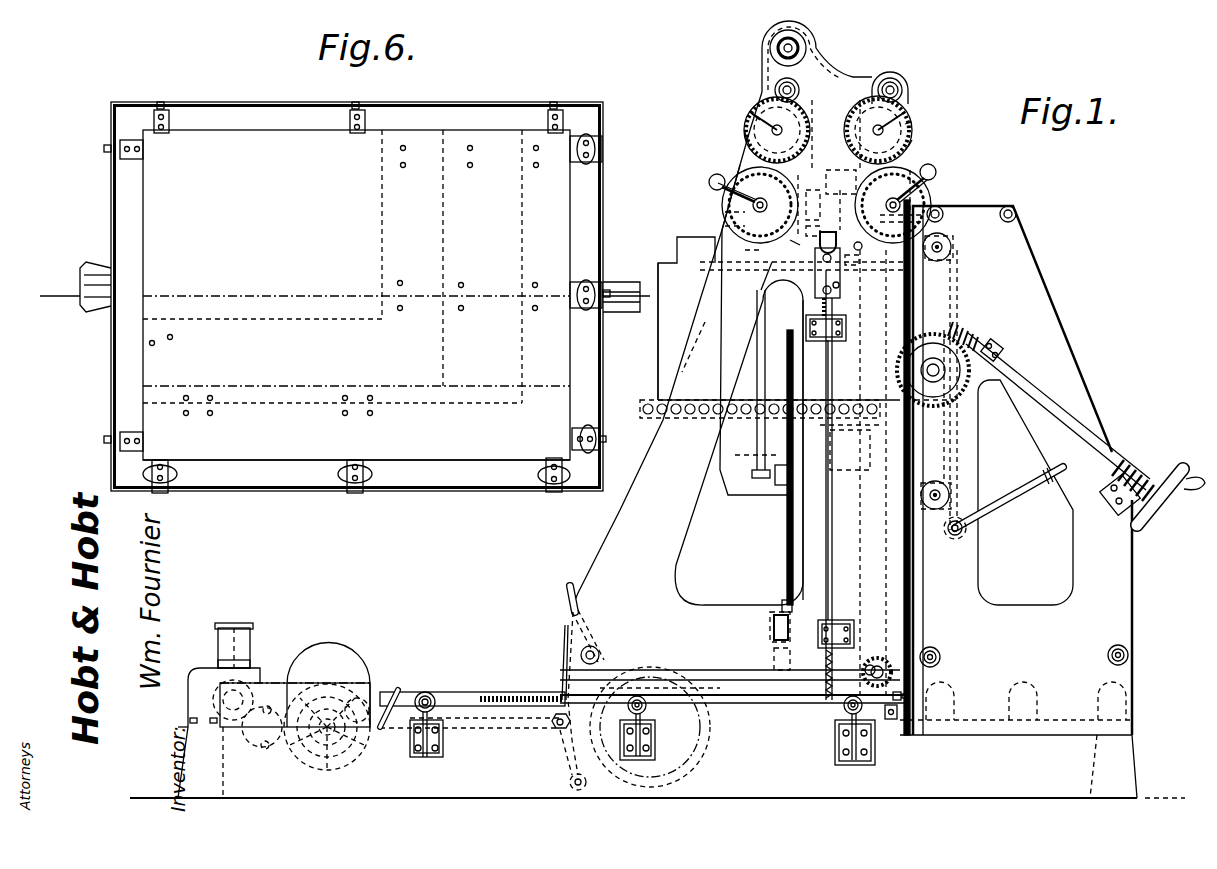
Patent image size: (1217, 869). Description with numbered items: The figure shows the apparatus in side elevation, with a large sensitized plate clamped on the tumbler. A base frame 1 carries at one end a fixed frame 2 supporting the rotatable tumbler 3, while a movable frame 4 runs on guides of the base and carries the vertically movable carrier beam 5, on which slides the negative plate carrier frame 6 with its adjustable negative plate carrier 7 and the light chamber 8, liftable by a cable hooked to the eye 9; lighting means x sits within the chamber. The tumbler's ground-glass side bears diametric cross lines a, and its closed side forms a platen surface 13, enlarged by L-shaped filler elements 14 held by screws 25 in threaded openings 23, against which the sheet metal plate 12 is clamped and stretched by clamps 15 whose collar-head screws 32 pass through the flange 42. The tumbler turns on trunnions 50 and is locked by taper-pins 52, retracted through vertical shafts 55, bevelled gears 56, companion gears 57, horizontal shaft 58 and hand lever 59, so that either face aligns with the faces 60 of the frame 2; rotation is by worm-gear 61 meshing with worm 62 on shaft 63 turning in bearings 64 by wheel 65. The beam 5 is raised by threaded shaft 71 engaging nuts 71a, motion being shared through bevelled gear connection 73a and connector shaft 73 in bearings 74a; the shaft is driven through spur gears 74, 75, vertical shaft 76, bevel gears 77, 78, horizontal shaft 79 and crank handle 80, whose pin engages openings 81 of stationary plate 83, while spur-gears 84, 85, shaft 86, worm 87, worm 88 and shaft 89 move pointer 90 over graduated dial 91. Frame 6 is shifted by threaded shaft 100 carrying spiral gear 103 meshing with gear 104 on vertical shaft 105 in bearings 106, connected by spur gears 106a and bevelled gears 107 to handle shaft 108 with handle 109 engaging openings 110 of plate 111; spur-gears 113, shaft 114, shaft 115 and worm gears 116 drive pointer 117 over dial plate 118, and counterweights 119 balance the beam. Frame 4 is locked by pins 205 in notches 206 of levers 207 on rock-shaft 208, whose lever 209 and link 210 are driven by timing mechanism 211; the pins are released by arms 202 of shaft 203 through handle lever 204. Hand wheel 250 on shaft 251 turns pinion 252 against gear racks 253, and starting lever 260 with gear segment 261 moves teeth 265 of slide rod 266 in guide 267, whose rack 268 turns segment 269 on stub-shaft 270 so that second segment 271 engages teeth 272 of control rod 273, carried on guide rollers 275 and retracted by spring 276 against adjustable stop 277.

In FIG. 1, the base frame 1 is at (657, 766).
In FIG. 1, the frame 2 is at (1128, 584).
In FIG. 1, the tumbler 3 is at (950, 290).
In FIG. 1, the movable frame 4 is at (632, 541).
In FIG. 1, the carrier beam 5 is at (786, 506).
In FIG. 1, the negative plate carrier frame 6 is at (805, 385).
In FIG. 6, the negative plate carrier 7 is at (349, 293).
In FIG. 1, the negative plate carrier 7 is at (660, 298).
In FIG. 1, the light chamber 8 is at (662, 354).
In FIG. 1, the eye 9 is at (712, 258).
In FIG. 6, the light sensitive sheet metal plate 12 is at (470, 462).
In FIG. 6, the platen surface 13 is at (238, 165).
In FIG. 6, the filler elements 14 is at (446, 140).
In FIG. 6, the clamps 15 is at (168, 133).
In FIG. 6, the threaded openings 23 is at (470, 149).
In FIG. 6, the screws 25 is at (538, 166).
In FIG. 6, the collar-head screw 32 is at (160, 102).
In FIG. 6, the flange 42 is at (208, 108).
In FIG. 6, the trunnions 50 is at (622, 285).
In FIG. 1, the trunnions 50 is at (933, 370).
In FIG. 1, the taper-pins 52 is at (946, 243).
In FIG. 1, the vertical parallel shafts 55 is at (960, 444).
In FIG. 1, the bevelled gears 56 is at (946, 522).
In FIG. 1, the companion gears 57 is at (949, 534).
In FIG. 1, the horizontal shaft 58 is at (957, 535).
In FIG. 1, the hand lever 59 is at (1010, 492).
In FIG. 1, the faces of the frame 60 is at (922, 458).
In FIG. 1, the worm-gear 61 is at (952, 398).
In FIG. 1, the worm 62 is at (968, 338).
In FIG. 1, the shaft 63 is at (1028, 396).
In FIG. 1, the bearings 64 is at (1106, 508).
In FIG. 1, the wheel 65 is at (1172, 495).
In FIG. 1, the vertical threaded shaft 71 is at (786, 561).
In FIG. 1, the threaded nuts 71a is at (775, 478).
In FIG. 1, the connector shaft 73 is at (774, 632).
In FIG. 1, the bevelled gear connection 73a is at (780, 612).
In FIG. 1, the spur gear 74 is at (780, 272).
In FIG. 1, the bearings 74a is at (774, 655).
In FIG. 1, the spur gear 75 is at (757, 290).
In FIG. 1, the vertical shaft 76 is at (745, 250).
In FIG. 1, the bevel gear 77 is at (722, 226).
In FIG. 1, the bevel gear 78 is at (722, 212).
In FIG. 1, the horizontal shaft 79 is at (768, 200).
In FIG. 1, the crank handle 80 is at (718, 175).
In FIG. 1, the openings 81 is at (800, 200).
In FIG. 1, the stationary plate 83 is at (812, 206).
In FIG. 1, the spur-gear 84 is at (799, 236).
In FIG. 1, the spur-gear 85 is at (812, 230).
In FIG. 1, the shaft 86 is at (841, 178).
In FIG. 1, the worm 87 is at (814, 126).
In FIG. 1, the worm 88 is at (800, 90).
In FIG. 1, the horizontal rotatable shaft 89 is at (777, 130).
In FIG. 1, the pointer 90 is at (752, 114).
In FIG. 1, the graduated dial 91 is at (745, 132).
In FIG. 1, the horizontal threaded shaft 100 is at (760, 399).
In FIG. 1, the spiral gear 103 is at (850, 450).
In FIG. 1, the spiral gear 104 is at (852, 413).
In FIG. 1, the vertical shaft 105 is at (856, 580).
In FIG. 1, the bearings 106 is at (870, 664).
In FIG. 1, the spur gears 106a is at (867, 255).
In FIG. 1, the bevelled gears 107 is at (927, 198).
In FIG. 1, the handle shaft 108 is at (893, 205).
In FIG. 1, the operating handle 109 is at (936, 174).
In FIG. 1, the openings 110 is at (905, 170).
In FIG. 1, the plate 111 is at (928, 212).
In FIG. 1, the spur-gears 113 is at (838, 239).
In FIG. 1, the shaft 114 is at (839, 205).
In FIG. 1, the shaft 115 is at (878, 130).
In FIG. 1, the worm gears 116 is at (859, 129).
In FIG. 1, the pointer 117 is at (912, 122).
In FIG. 1, the graduated dial plate 118 is at (912, 140).
In FIG. 1, the counterweights 119 is at (757, 445).
In FIG. 1, the arms 202 is at (566, 655).
In FIG. 1, the shaft 203 is at (598, 652).
In FIG. 1, the handle lever 204 is at (586, 628).
In FIG. 1, the pins 205 is at (565, 683).
In FIG. 1, the notches 206 is at (552, 721).
In FIG. 1, the levers 207 is at (562, 732).
In FIG. 1, the rock-shaft 208 is at (570, 782).
In FIG. 1, the lever 209 is at (562, 752).
In FIG. 1, the link 210 is at (494, 728).
In FIG. 1, the timing mechanism 211 is at (362, 678).
In FIG. 1, the hand wheel 250 is at (705, 738).
In FIG. 1, the shaft 251 is at (658, 736).
In FIG. 1, the pinion 252 is at (690, 720).
In FIG. 1, the gear racks 253 is at (660, 682).
In FIG. 1, the starting lever 260 is at (818, 278).
In FIG. 1, the gear segment 261 is at (840, 285).
In FIG. 1, the teeth 265 is at (830, 305).
In FIG. 1, the slide rod 266 is at (834, 352).
In FIG. 1, the guide 267 is at (846, 328).
In FIG. 1, the rack 268 is at (836, 652).
In FIG. 1, the gear segment 269 is at (838, 722).
In FIG. 1, the stub-shaft 270 is at (884, 668).
In FIG. 1, the second segment 271 is at (871, 687).
In FIG. 1, the teeth 272 is at (897, 708).
In FIG. 1, the control rod 273 is at (770, 689).
In FIG. 1, the grooved guide rollers 275 is at (862, 724).
In FIG. 1, the spring 276 is at (496, 694).
In FIG. 1, the adjustable stop 277 is at (908, 696).
In FIG. 6, the diametric cross lines a is at (600, 158).
In FIG. 1, the lighting means x is at (690, 345).